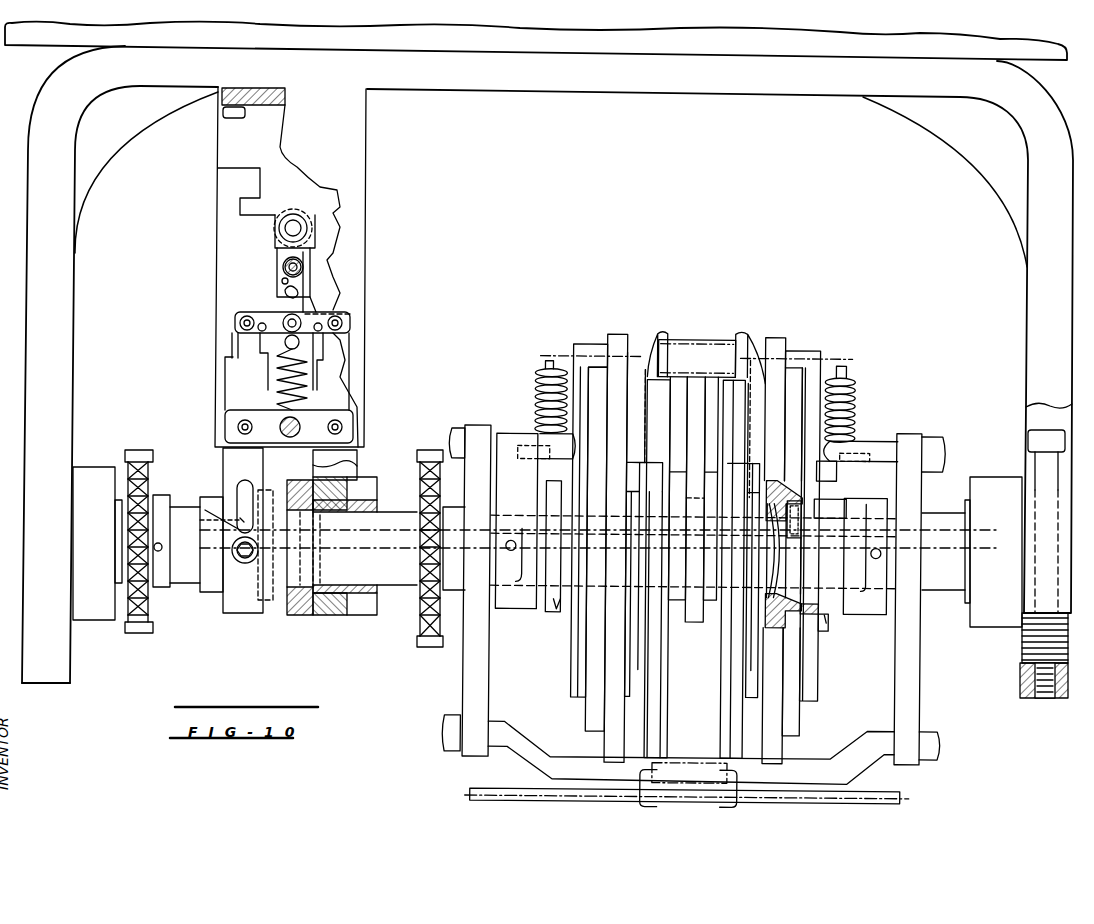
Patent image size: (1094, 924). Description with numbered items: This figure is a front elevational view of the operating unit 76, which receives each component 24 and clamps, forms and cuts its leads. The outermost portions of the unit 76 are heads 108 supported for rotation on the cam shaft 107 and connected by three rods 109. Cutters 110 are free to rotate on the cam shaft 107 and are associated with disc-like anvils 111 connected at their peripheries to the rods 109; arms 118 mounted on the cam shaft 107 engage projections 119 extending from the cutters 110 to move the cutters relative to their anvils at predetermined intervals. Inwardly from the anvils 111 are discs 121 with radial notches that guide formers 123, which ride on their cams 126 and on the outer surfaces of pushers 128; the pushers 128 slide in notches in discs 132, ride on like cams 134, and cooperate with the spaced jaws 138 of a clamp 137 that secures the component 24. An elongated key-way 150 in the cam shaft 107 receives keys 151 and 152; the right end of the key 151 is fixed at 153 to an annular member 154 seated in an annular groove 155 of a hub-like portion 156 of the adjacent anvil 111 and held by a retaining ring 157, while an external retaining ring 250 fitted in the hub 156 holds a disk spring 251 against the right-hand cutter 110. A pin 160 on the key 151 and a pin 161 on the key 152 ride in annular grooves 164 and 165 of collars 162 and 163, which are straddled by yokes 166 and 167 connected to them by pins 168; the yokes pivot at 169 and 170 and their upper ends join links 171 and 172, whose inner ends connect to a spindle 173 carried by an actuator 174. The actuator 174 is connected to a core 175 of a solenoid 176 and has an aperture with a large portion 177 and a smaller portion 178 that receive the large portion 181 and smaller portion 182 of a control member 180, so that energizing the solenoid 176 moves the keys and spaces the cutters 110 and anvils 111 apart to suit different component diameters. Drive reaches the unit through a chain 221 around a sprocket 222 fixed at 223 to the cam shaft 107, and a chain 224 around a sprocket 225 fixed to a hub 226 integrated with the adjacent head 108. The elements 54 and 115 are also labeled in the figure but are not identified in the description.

The component 24 is at (698, 338).
The rod 54 is at (905, 797).
The operating unit 76 is at (860, 340).
The cam shaft 107 is at (182, 507).
The heads 108 is at (465, 685).
The rods 109 is at (528, 757).
The cutters 110 is at (580, 345).
The anvils 111 is at (605, 637).
The spring 115 is at (535, 386).
The arms 118 is at (527, 610).
The projections 119 is at (532, 460).
The discs 121 is at (753, 690).
The formers 123 is at (633, 355).
The cams 126 is at (742, 663).
The pushers 128 is at (733, 408).
The discs 132 is at (720, 712).
The cams 134 is at (730, 640).
The clamp 137 is at (708, 370).
The jaws 138 is at (654, 330).
The key-way 150 is at (322, 525).
The key 151 is at (313, 540).
The key 152 is at (300, 486).
The fixing point 153 is at (806, 540).
The annular member 154 is at (798, 572).
The annular groove 155 is at (802, 588).
The hub-like portion 156 is at (820, 486).
The retaining ring 157 is at (822, 630).
The pin 160 is at (330, 515).
The pin 161 is at (258, 485).
The collar 162 is at (345, 615).
The collar 163 is at (225, 617).
The annular groove 164 is at (300, 616).
The annular groove 165 is at (265, 604).
The yoke 166 is at (352, 466).
The yoke 167 is at (222, 462).
The pins 168 is at (245, 563).
The pivot 169 is at (343, 427).
The pivot 170 is at (238, 427).
The link 171 is at (313, 313).
The link 172 is at (233, 322).
The spindle 173 is at (278, 348).
The actuator 174 is at (310, 257).
The core 175 is at (310, 190).
The solenoid 176 is at (228, 153).
The large portion of aperture 177 is at (282, 280).
The smaller portion of aperture 178 is at (284, 292).
The control member 180 is at (280, 265).
The large portion 181 is at (277, 230).
The smaller portion 182 is at (300, 272).
The chain 221 is at (128, 633).
The sprocket 222 is at (128, 472).
The fixed mounting 223 is at (160, 553).
The chain 224 is at (418, 643).
The sprocket 225 is at (418, 608).
The hub 226 is at (443, 640).
The external retaining ring 250 is at (556, 612).
The disk spring 251 is at (560, 630).